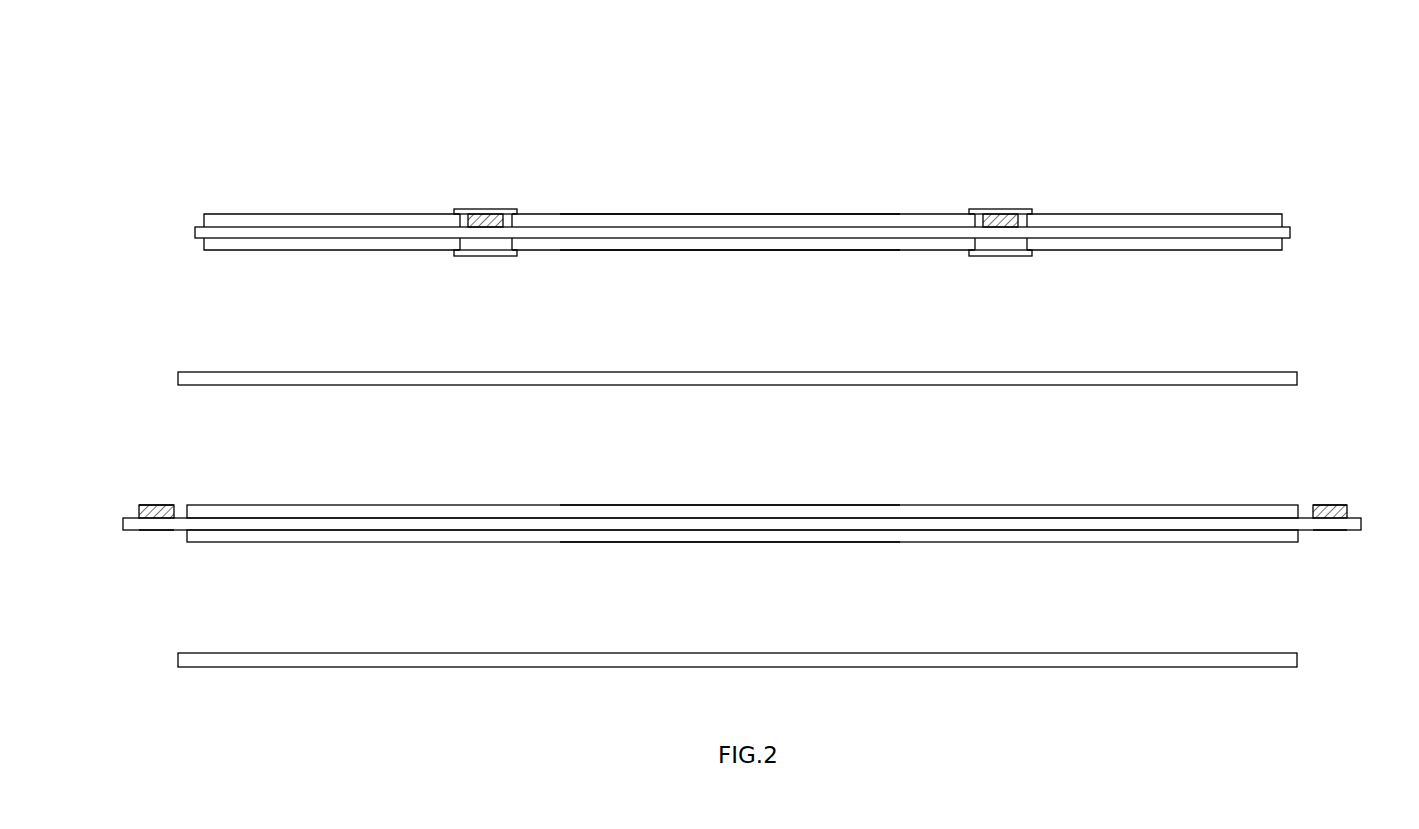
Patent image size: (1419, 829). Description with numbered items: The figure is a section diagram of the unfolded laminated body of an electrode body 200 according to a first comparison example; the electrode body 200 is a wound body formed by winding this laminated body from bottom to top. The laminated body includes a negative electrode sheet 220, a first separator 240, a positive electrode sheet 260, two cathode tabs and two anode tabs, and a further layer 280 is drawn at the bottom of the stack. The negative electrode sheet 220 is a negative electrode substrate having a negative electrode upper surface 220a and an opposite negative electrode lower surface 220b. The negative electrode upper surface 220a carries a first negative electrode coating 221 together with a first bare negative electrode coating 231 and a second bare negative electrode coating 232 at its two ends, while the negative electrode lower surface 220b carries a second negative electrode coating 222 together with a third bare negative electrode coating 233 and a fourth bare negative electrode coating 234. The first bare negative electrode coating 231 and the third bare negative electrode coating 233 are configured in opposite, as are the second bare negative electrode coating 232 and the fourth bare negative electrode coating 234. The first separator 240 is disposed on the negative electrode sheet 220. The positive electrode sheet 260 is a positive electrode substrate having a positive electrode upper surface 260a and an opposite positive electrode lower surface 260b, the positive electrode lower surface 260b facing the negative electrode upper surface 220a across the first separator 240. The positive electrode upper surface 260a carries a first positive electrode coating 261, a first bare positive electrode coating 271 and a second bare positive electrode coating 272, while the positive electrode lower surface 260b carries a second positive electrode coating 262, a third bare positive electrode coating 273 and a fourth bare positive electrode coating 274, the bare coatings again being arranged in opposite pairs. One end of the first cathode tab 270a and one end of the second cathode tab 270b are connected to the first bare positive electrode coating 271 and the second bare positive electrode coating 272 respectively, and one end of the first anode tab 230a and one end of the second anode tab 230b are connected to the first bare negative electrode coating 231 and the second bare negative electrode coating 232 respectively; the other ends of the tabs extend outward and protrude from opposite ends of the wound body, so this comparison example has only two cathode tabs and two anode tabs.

The electrode body 200 is at (174, 85).
The positive electrode sheet 260 is at (162, 231).
The positive electrode upper surface 260a is at (697, 214).
The positive electrode lower surface 260b is at (697, 250).
The first positive electrode coating 261 is at (305, 220).
The second positive electrode coating 262 is at (305, 245).
The first cathode tab 270a is at (497, 221).
The second cathode tab 270b is at (1010, 221).
The first bare positive electrode coating 271 is at (485, 196).
The second bare positive electrode coating 272 is at (998, 196).
The third bare positive electrode coating 273 is at (485, 266).
The fourth bare positive electrode coating 274 is at (998, 266).
The first separator 240 is at (162, 377).
The negative electrode sheet 220 is at (115, 523).
The negative electrode upper surface 220a is at (697, 505).
The negative electrode lower surface 220b is at (697, 542).
The first negative electrode coating 221 is at (757, 511).
The second negative electrode coating 222 is at (757, 536).
The first anode tab 230a is at (167, 508).
The second anode tab 230b is at (1328, 508).
The first bare negative electrode coating 231 is at (157, 486).
The second bare negative electrode coating 232 is at (1318, 486).
The third bare negative electrode coating 233 is at (157, 536).
The fourth bare negative electrode coating 234 is at (1318, 536).
The protective layer 280 is at (162, 658).